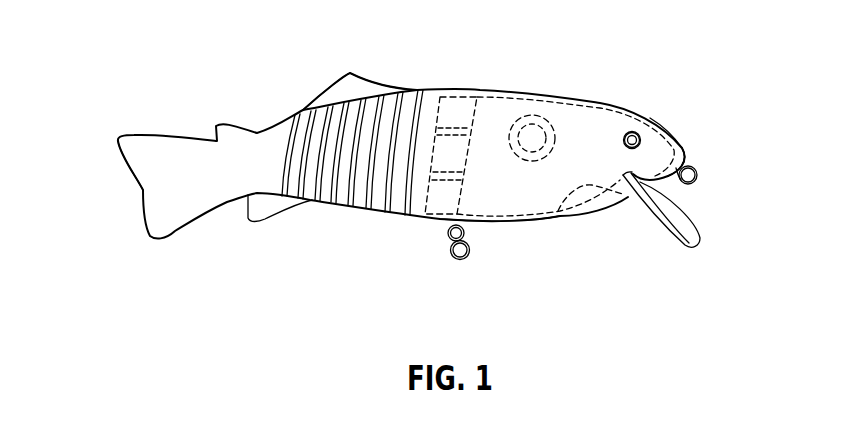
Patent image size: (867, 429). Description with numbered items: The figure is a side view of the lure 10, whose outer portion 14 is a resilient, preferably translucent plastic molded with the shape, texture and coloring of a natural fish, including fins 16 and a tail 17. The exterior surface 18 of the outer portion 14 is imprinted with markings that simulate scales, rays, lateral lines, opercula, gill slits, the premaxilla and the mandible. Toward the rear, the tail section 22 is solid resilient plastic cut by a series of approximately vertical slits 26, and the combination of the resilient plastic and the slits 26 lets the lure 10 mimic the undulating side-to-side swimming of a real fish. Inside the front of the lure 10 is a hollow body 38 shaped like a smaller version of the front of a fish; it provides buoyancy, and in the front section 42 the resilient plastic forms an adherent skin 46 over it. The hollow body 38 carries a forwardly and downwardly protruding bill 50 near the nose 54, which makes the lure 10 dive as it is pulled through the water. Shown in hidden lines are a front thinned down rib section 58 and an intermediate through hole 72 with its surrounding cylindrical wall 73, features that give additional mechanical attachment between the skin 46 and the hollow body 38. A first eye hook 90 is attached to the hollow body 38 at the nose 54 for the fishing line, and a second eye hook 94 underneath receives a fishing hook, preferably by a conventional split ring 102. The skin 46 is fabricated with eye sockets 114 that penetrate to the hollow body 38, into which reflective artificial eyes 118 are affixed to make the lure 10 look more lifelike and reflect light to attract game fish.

The lure 10 is at (255, 30).
The outer portion 14 is at (603, 103).
The fins 16 is at (262, 220).
The tail 17 is at (153, 190).
The exterior surface 18 is at (477, 90).
The tail section 22 is at (348, 222).
The slits 26 is at (332, 110).
The hollow body 38 is at (528, 205).
The front section 42 is at (559, 255).
The skin 46 is at (683, 141).
The bill 50 is at (698, 229).
The nose 54 is at (700, 149).
The front thinned down rib section 58 is at (592, 198).
The intermediate through hole 72 is at (534, 134).
The cylindrical wall 73 is at (531, 134).
The first eye hook 90 is at (700, 182).
The second eye hook 94 is at (443, 232).
The split ring 102 is at (457, 262).
The eye sockets 114 is at (641, 139).
The reflective artificial eyes 118 is at (636, 133).